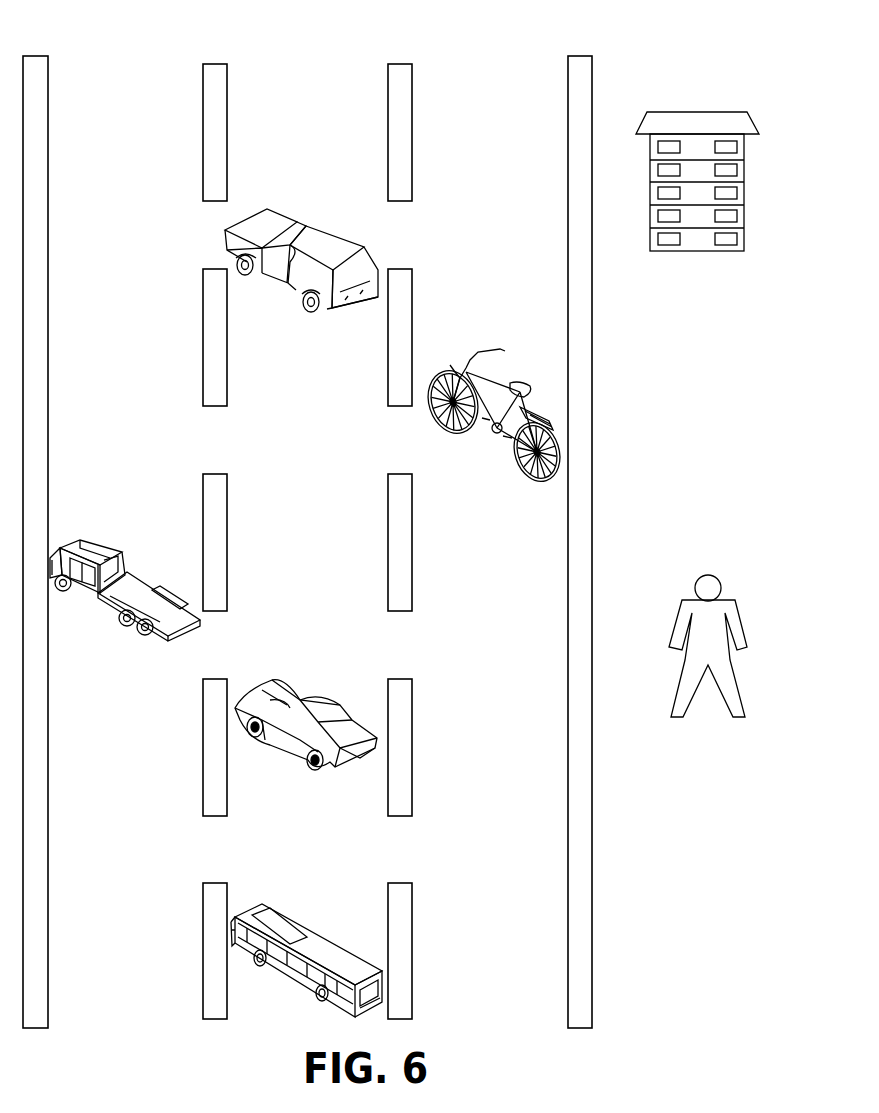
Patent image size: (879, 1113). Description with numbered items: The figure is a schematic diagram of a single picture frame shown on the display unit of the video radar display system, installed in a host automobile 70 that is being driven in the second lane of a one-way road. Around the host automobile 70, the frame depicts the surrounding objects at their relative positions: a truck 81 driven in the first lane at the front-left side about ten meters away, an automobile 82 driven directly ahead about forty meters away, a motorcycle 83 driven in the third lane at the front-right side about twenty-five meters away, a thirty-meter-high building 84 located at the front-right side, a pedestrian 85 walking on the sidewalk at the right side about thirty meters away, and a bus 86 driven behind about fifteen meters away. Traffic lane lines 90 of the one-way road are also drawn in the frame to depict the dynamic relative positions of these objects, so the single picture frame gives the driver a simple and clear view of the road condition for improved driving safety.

The host automobile 70 is at (322, 690).
The truck 81 is at (113, 543).
The automobile 82 is at (320, 218).
The motorcycle 83 is at (500, 346).
The building 84 is at (697, 112).
The pedestrian 85 is at (713, 574).
The bus 86 is at (322, 935).
The traffic lane lines 90 is at (35, 56).